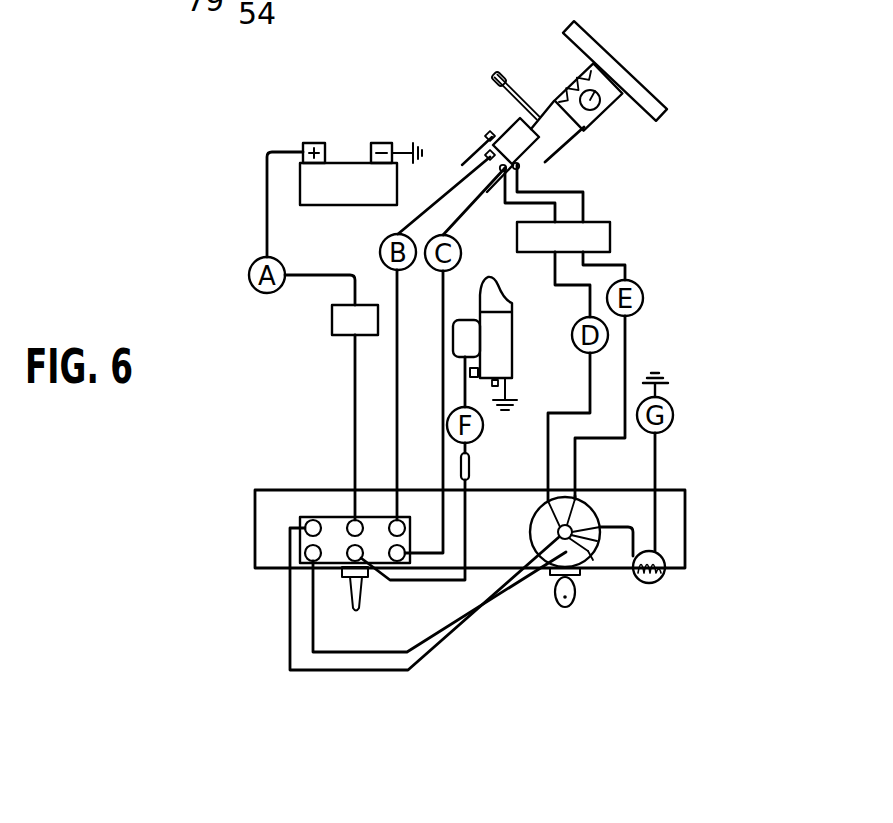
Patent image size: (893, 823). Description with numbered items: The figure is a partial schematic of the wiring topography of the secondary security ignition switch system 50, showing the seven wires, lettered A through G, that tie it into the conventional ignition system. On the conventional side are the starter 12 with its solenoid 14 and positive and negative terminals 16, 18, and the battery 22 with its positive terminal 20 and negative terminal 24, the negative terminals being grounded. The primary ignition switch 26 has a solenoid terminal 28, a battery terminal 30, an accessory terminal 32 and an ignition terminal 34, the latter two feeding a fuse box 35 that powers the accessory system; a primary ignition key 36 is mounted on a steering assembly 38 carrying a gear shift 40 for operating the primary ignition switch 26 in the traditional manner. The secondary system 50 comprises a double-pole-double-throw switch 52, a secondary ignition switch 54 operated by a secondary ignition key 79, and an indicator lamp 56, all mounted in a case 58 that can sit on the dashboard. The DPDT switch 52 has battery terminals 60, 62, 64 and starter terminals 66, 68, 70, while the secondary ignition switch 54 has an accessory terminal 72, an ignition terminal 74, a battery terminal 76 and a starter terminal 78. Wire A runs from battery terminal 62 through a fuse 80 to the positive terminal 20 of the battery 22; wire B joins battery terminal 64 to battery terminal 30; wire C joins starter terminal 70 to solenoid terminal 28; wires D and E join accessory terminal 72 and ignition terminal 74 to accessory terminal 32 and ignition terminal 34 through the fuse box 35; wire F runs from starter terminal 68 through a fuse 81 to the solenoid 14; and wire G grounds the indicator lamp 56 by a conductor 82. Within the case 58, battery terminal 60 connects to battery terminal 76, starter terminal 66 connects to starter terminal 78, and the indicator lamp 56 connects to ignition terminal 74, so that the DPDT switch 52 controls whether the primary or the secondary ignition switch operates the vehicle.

The starter 12 is at (512, 333).
The solenoid 14 is at (455, 337).
The positive terminal 16 is at (470, 372).
The negative terminal 18 is at (510, 392).
The positive terminal 20 is at (318, 143).
The battery 22 is at (352, 205).
The negative terminal 24 is at (380, 143).
The primary ignition switch 26 is at (508, 128).
The solenoid terminal 28 is at (490, 138).
The battery terminal 30 is at (492, 132).
The accessory terminal 32 is at (478, 176).
The ignition terminal 34 is at (522, 166).
The fuse box 35 is at (610, 237).
The primary ignition key 36 is at (600, 110).
The steering assembly 38 is at (600, 33).
The gear shift 40 is at (520, 96).
The secondary security ignition switch system 50 is at (232, 496).
The double-pole-double-throw switch 52 is at (326, 518).
The secondary ignition switch 54 is at (580, 576).
The indicator lamp 56 is at (660, 580).
The case 58 is at (685, 524).
The battery terminal 60 is at (308, 520).
The battery terminal 62 is at (350, 519).
The battery terminal 64 is at (405, 519).
The starter terminal 66 is at (306, 546).
The starter terminal 68 is at (352, 562).
The starter terminal 70 is at (385, 572).
The accessory terminal 72 is at (542, 527).
The ignition terminal 74 is at (584, 501).
The battery terminal 76 is at (592, 557).
The starter terminal 78 is at (599, 521).
The secondary ignition key 79 is at (555, 592).
The fuse 80 is at (332, 320).
The fuse 81 is at (469, 466).
The conductor 82 is at (656, 450).